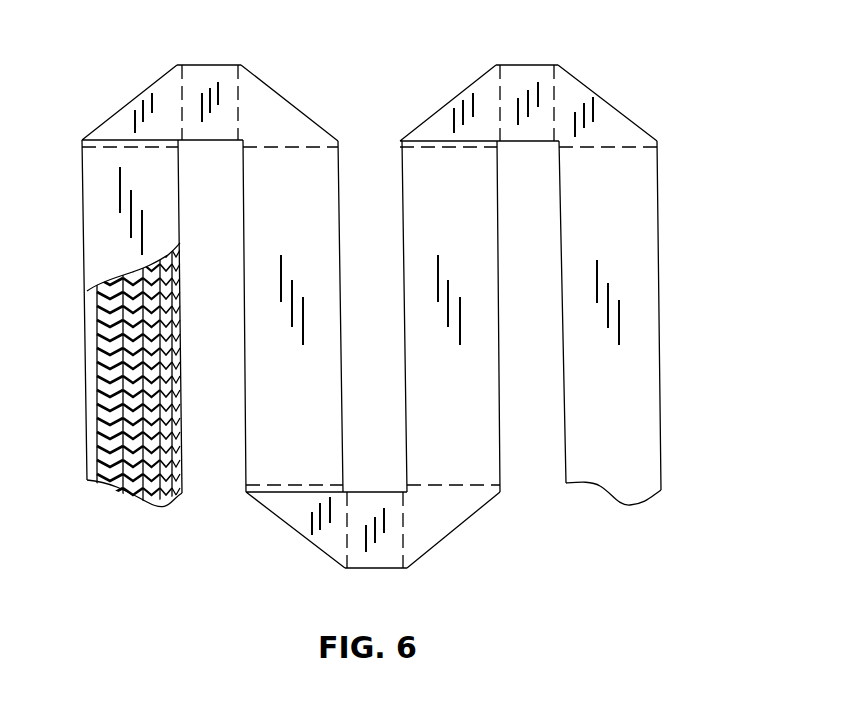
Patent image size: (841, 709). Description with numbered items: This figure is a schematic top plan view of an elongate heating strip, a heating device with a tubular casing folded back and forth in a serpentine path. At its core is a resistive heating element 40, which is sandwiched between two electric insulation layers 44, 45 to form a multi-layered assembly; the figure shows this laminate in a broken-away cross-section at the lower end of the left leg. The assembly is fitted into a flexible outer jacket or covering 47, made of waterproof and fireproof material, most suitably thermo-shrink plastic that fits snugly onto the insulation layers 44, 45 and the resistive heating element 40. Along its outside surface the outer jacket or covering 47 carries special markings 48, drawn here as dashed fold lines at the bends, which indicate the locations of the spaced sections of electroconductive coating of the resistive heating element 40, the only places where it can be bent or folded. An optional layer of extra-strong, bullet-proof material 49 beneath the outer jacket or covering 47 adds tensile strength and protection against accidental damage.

The resistive heating element 40 is at (117, 390).
The electric insulation layer 44 is at (117, 317).
The electric insulation layer 45 is at (156, 496).
The outer jacket or covering 47 is at (638, 313).
The special markings 48 is at (277, 147).
The layer of extra-strong, bullet-proof material 49 is at (102, 438).